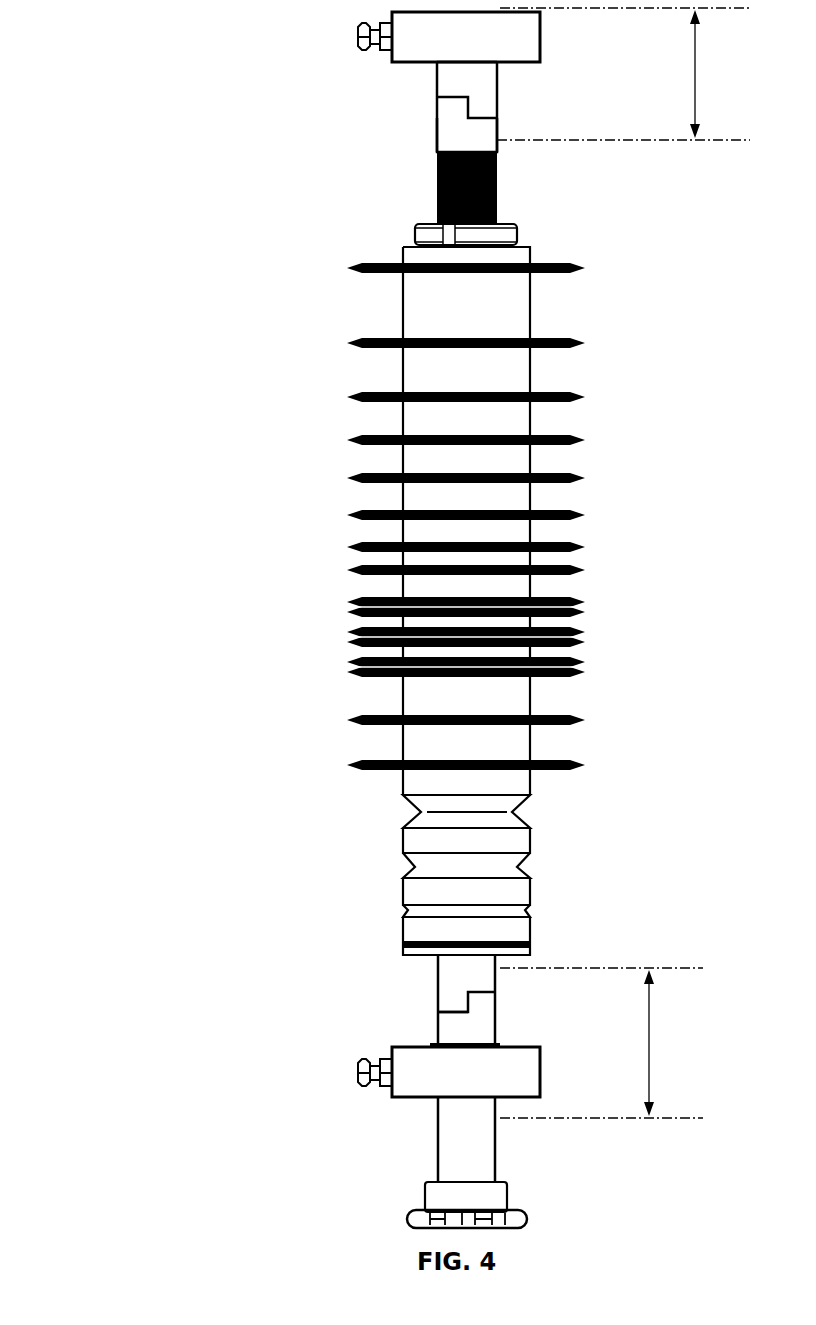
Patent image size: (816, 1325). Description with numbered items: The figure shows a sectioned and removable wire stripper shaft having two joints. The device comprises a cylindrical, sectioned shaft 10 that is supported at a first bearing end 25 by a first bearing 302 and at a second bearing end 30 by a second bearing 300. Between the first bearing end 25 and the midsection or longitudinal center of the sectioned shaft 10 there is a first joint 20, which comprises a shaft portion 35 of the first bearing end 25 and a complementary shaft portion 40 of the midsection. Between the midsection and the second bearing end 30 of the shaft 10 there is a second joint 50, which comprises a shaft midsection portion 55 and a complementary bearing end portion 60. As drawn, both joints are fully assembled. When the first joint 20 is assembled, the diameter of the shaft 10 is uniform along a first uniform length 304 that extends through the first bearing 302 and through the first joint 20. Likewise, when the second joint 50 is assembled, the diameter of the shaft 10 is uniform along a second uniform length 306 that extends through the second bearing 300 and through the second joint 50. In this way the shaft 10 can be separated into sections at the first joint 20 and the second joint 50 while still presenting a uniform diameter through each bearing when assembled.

The sectioned shaft 10 is at (132, 572).
The first joint 20 is at (440, 1012).
The first bearing end 25 is at (478, 1156).
The second bearing end 30 is at (492, 67).
The shaft portion 35 is at (478, 1030).
The complementary shaft portion 40 is at (443, 982).
The second joint 50 is at (437, 97).
The shaft midsection portion 55 is at (437, 136).
The complementary bearing end portion 60 is at (478, 90).
The second bearing 300 is at (486, 50).
The first bearing 302 is at (486, 1085).
The first uniform length 304 is at (601, 1043).
The second uniform length 306 is at (623, 74).